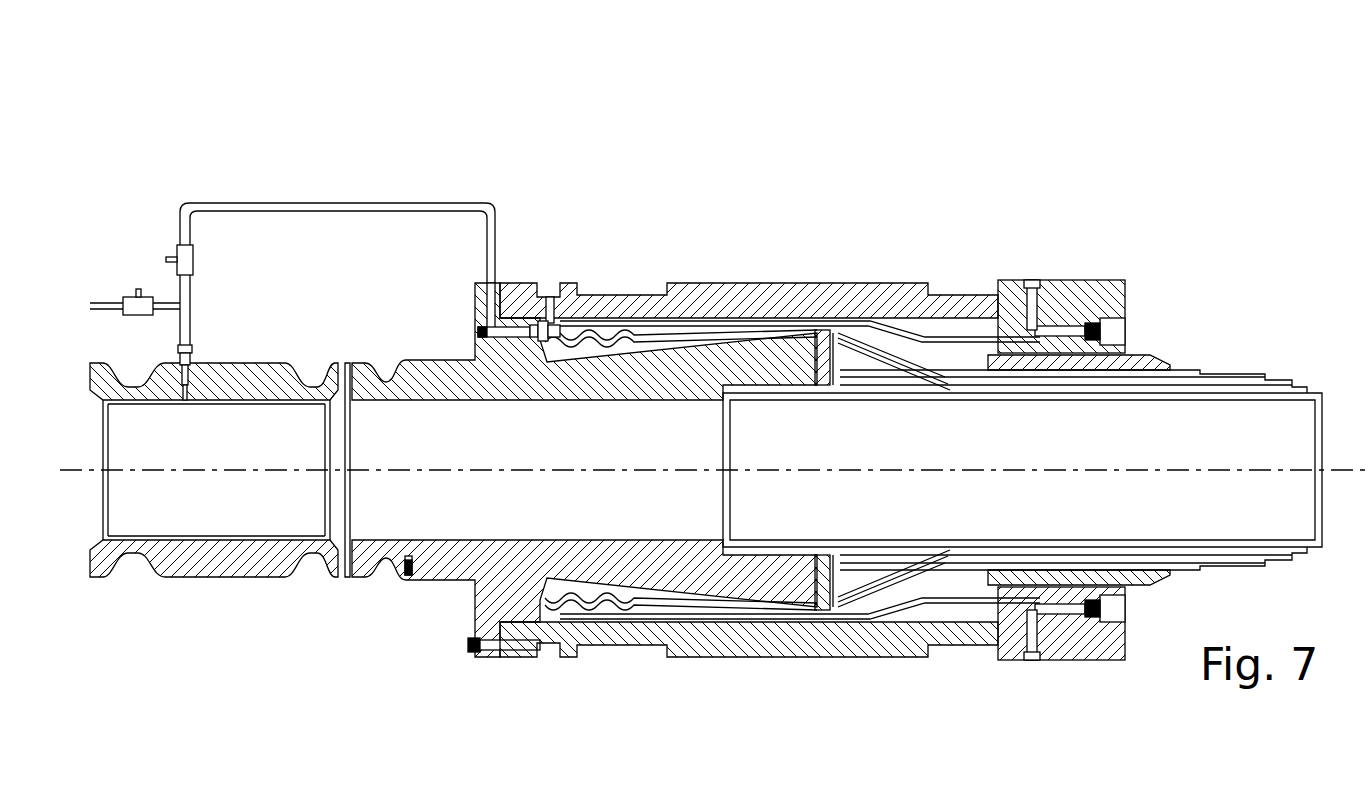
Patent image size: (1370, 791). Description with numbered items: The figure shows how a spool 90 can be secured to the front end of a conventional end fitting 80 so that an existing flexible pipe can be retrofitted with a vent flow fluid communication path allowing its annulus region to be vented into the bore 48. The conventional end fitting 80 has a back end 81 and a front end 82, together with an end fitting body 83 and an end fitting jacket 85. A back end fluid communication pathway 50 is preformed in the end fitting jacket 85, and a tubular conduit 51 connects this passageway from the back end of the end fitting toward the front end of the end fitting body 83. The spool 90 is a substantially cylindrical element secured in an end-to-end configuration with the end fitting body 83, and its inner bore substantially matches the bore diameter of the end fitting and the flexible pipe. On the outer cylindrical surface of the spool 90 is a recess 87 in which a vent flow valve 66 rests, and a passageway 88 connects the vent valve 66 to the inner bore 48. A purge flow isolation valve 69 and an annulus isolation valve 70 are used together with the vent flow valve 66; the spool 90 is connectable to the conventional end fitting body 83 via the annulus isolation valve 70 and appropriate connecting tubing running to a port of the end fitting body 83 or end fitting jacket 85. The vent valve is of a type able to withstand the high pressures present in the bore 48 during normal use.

The bore 48 is at (672, 450).
The back end fluid communication pathway 50 is at (1010, 320).
The tubular conduit 51 is at (690, 330).
The vent flow valve 66 is at (195, 352).
The purge flow isolation valve 69 is at (137, 290).
The annulus isolation valve 70 is at (175, 259).
The conventional end fitting 80 is at (740, 92).
The back end 81 is at (1045, 102).
The front end 82 is at (400, 142).
The end fitting body 83 is at (472, 572).
The end fitting jacket 85 is at (878, 650).
The recess 87 is at (178, 372).
The passageway 88 is at (186, 402).
The spool 90 is at (190, 573).